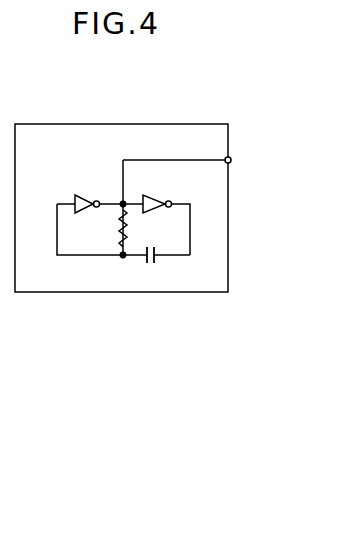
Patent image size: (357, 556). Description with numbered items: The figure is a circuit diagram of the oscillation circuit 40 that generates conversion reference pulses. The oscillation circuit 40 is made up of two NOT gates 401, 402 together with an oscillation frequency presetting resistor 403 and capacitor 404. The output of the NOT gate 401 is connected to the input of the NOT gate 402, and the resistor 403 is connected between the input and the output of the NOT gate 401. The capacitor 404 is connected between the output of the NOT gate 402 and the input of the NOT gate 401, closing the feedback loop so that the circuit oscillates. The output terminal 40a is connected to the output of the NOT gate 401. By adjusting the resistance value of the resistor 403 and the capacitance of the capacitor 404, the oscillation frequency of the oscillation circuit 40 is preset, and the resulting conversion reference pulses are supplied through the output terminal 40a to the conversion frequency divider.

The oscillation circuit 40 is at (140, 124).
The output terminal 40a is at (256, 151).
The NOT gate 401 is at (88, 184).
The NOT gate 402 is at (162, 191).
The oscillation frequency presetting resistor 403 is at (120, 218).
The oscillation frequency presetting capacitor 404 is at (156, 259).